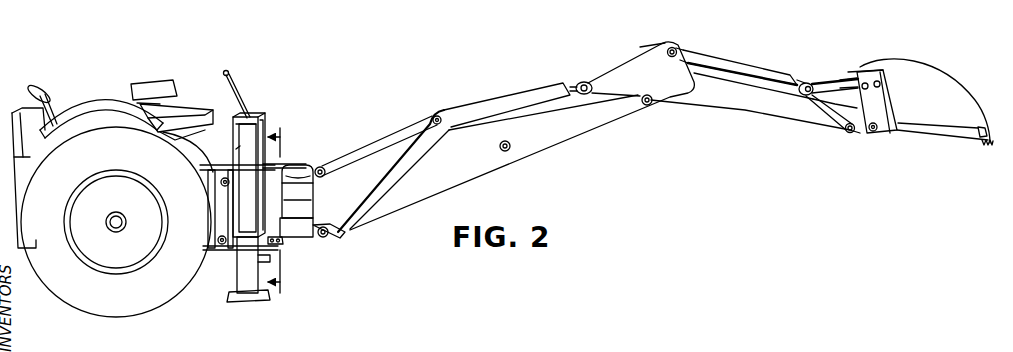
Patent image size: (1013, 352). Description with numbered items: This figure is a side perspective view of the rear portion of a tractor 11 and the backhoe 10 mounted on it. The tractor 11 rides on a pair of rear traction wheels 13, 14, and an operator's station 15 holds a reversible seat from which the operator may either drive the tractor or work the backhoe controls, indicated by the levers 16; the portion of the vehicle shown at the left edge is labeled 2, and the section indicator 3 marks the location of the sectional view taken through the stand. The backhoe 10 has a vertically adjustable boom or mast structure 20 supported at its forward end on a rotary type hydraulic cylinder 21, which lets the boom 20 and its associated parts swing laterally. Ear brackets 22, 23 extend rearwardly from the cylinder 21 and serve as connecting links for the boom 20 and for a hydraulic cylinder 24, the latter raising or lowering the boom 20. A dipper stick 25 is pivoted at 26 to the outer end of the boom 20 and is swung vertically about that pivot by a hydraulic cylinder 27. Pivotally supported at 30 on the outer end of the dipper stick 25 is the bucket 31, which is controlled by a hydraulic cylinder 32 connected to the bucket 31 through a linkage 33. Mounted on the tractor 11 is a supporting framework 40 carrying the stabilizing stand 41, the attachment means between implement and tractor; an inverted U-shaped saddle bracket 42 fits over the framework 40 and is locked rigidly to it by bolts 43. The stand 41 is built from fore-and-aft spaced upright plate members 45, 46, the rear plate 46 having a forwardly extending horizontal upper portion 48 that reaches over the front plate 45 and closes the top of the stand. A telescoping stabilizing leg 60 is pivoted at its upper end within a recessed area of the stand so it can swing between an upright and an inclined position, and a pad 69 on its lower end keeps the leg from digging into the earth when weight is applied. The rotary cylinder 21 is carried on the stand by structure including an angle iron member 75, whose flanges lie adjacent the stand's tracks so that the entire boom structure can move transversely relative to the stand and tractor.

The tractor 2 is at (12, 118).
The section line 3- 3 is at (280, 210).
The backhoe 10 is at (640, 46).
The tractor 11 is at (94, 101).
The rear traction wheel 13 is at (168, 289).
The rear traction wheel 14 is at (192, 148).
The operator's station 15 is at (152, 88).
The levers 16 is at (236, 86).
The boom or mast structure 20 is at (550, 141).
The rotary type hydraulic cylinder 21 is at (314, 193).
The ear bracket 22 is at (313, 236).
The ear bracket 23 is at (309, 170).
The hydraulic cylinder 24 is at (367, 163).
The dipper stick 25 is at (745, 104).
The pivot 26 is at (648, 107).
The hydraulic cylinder 27 is at (518, 99).
The pivot 30 is at (874, 132).
The bucket 31 is at (942, 81).
The hydraulic cylinder 32 is at (748, 71).
The linkage 33 is at (825, 88).
The supporting framework 40 is at (209, 182).
The stabilizing stand 41 is at (268, 116).
The saddle bracket 42 is at (225, 206).
The bolts 43 is at (214, 212).
The front upright plate member 45 is at (236, 149).
The rear upright plate member 46 is at (265, 128).
The horizontal upper portion 48 is at (252, 114).
The stabilizing leg 60 is at (235, 270).
The pad 69 is at (257, 301).
The angle iron member 75 is at (286, 208).